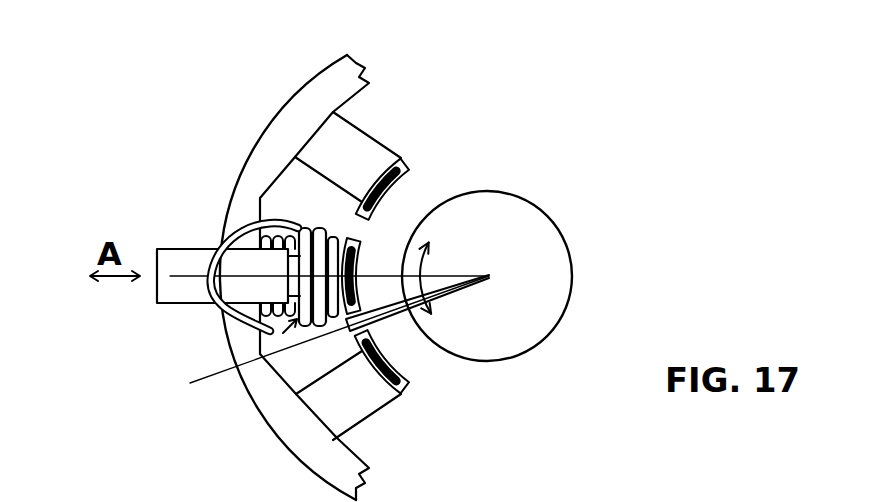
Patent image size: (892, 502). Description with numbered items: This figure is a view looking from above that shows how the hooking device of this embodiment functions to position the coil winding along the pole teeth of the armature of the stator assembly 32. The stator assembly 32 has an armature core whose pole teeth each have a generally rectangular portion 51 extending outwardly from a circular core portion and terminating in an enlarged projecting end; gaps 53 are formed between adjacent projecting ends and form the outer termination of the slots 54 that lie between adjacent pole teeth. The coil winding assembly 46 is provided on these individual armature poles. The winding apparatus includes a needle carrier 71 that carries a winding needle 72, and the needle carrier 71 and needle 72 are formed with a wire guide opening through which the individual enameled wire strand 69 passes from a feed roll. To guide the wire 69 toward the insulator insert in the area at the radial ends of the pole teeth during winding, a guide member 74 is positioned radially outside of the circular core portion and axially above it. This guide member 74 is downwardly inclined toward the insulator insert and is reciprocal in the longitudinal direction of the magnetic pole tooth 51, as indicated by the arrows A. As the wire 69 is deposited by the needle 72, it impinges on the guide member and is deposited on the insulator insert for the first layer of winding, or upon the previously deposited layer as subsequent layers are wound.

The stator assembly 32 is at (276, 103).
The coil winding assembly 46 is at (300, 378).
The rectangular portion 51 is at (360, 147).
The gap 53 is at (382, 218).
The slot 54 is at (293, 160).
The wire strand 69 is at (238, 233).
The needle carrier 71 is at (553, 232).
The winding needle 72 is at (400, 313).
The guide member 74 is at (173, 298).